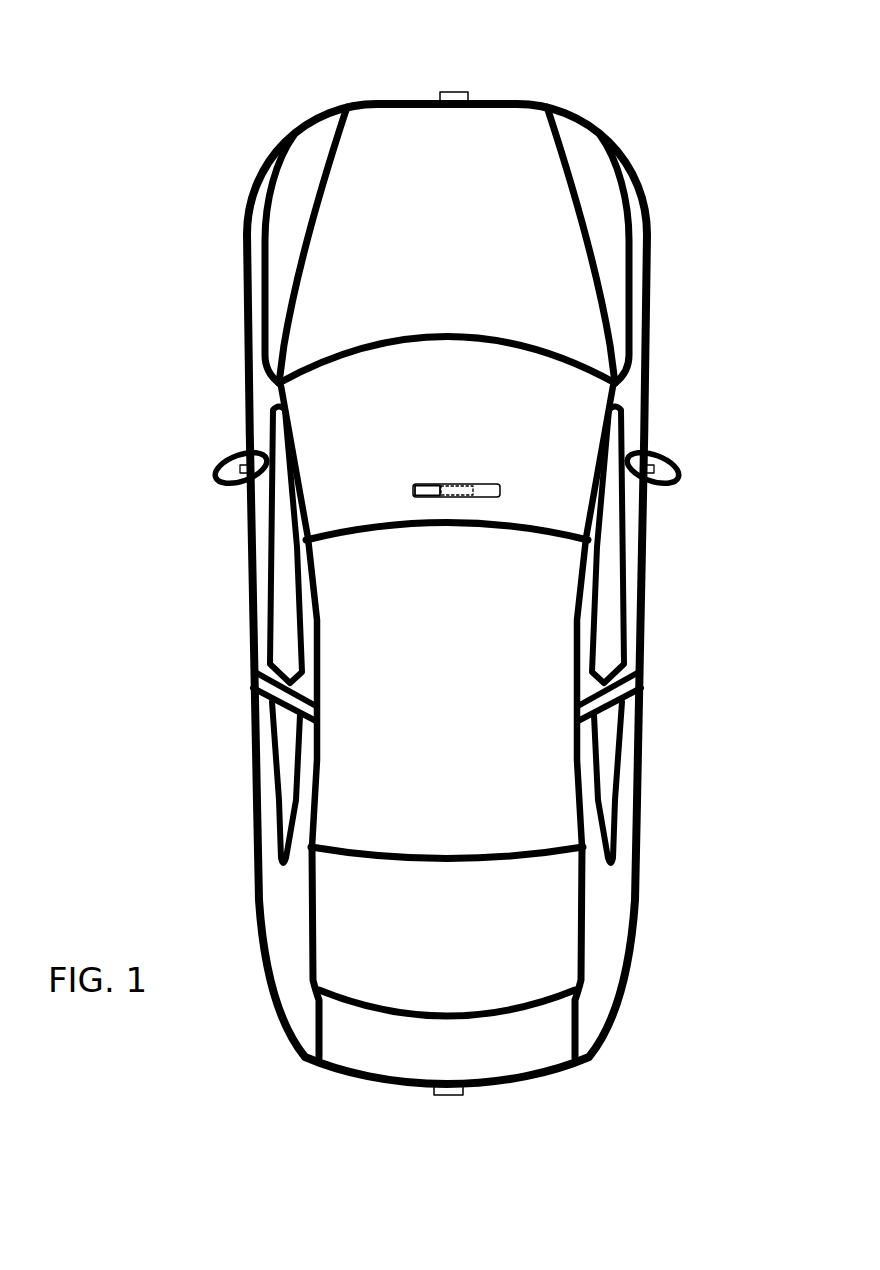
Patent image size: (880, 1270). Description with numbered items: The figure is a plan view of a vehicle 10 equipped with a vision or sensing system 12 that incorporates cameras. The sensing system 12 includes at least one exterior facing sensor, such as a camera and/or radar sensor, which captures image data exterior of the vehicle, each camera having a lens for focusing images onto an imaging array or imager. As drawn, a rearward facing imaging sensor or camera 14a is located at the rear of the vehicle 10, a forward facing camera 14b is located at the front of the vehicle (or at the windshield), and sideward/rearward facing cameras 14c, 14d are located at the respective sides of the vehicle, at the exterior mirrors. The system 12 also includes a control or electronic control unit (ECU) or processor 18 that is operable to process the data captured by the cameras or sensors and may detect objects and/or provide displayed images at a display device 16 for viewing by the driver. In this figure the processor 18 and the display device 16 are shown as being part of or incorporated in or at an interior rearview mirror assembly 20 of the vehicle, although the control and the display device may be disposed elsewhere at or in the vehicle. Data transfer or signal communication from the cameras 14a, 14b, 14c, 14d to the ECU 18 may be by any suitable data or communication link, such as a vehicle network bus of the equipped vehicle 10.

The vehicle 10 is at (192, 178).
The sensing system 12 is at (398, 1113).
The rearward facing imaging sensor or camera 14a is at (450, 1094).
The forward facing camera 14b is at (456, 90).
The sideward/rearward facing camera 14c is at (230, 460).
The sideward/rearward facing camera 14d is at (666, 460).
The display device 16 is at (430, 486).
The electronic control unit (ECU) or processor 18 is at (452, 486).
The interior rearview mirror assembly 20 is at (502, 484).